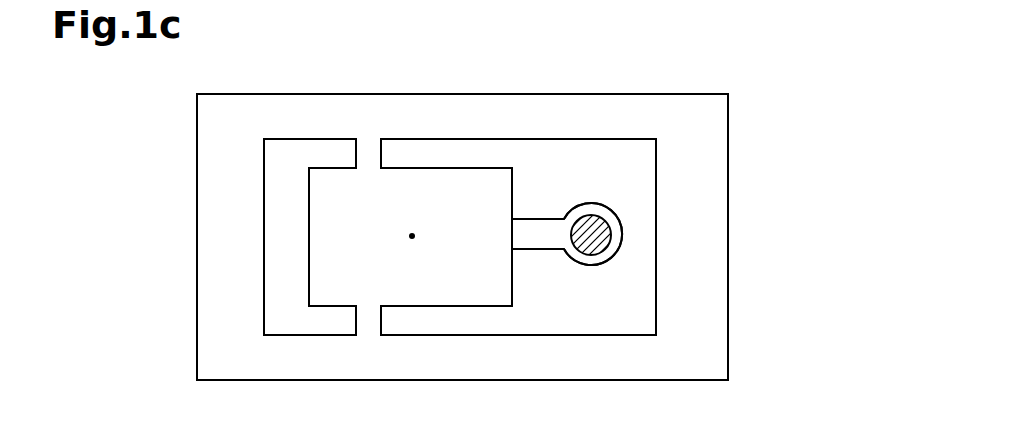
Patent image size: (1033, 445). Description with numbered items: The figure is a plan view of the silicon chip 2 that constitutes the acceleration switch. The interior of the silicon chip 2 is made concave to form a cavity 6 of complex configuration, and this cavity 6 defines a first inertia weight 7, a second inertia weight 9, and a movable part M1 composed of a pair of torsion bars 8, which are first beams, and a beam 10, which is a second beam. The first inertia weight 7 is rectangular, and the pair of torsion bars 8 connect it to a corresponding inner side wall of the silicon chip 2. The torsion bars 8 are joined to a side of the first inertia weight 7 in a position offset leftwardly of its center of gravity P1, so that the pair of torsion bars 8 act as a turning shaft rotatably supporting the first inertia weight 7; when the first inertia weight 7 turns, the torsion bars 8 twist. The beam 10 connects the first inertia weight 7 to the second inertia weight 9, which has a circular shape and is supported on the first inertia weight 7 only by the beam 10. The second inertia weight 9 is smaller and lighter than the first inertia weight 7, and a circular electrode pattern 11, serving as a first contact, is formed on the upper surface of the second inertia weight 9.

The silicon chip 2 is at (728, 273).
The movable part M1 is at (309, 233).
The cavity 6 is at (530, 327).
The first inertia weight 7 is at (433, 293).
The torsion bars 8 is at (372, 155).
The second inertia weight 9 is at (603, 209).
The beam 10 is at (537, 223).
The electrode pattern 11 is at (595, 245).
The center of gravity P1 is at (414, 236).